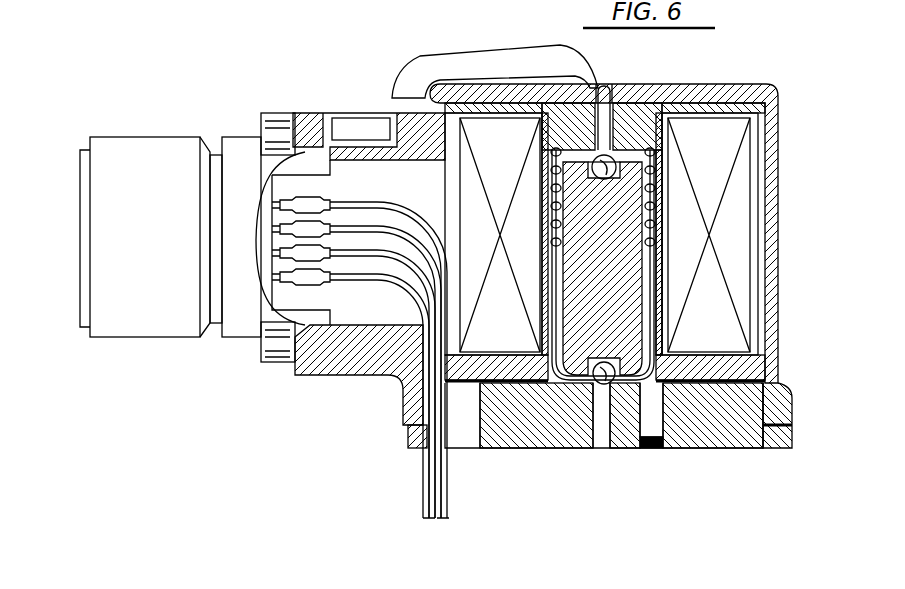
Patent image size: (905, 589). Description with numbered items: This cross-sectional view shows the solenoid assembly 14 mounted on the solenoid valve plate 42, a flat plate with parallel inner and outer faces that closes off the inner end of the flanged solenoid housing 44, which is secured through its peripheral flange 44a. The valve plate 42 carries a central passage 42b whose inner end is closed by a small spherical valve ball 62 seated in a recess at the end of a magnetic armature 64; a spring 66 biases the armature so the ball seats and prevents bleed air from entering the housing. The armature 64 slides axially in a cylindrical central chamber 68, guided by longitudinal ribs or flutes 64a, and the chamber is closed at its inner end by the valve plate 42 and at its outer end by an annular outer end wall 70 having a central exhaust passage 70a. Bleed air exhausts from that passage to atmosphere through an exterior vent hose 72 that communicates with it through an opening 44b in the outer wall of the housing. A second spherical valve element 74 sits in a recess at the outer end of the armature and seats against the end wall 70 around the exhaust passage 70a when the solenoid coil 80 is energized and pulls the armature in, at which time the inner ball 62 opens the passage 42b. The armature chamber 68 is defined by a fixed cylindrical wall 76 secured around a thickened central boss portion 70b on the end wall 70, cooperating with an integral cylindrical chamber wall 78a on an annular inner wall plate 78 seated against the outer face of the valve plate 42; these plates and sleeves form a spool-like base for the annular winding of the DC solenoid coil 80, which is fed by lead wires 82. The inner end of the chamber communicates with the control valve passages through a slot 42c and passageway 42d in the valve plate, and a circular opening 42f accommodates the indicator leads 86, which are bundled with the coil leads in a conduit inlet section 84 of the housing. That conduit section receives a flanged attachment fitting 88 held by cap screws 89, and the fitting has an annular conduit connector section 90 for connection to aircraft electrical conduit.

The solenoid assembly 14 is at (640, 494).
The solenoid valve plate 42 is at (737, 441).
The central passage 42b is at (598, 442).
The slot 42c is at (645, 441).
The passageway 42d is at (658, 403).
The circular opening 42f is at (475, 430).
The solenoid housing 44 is at (772, 84).
The peripheral flange 44a is at (793, 405).
The opening 44b is at (592, 85).
The valve ball 62 is at (608, 358).
The magnetic armature 64 is at (613, 258).
The ribs or flutes 64a is at (650, 287).
The spring 66 is at (660, 185).
The central chamber 68 is at (612, 122).
The annular outer end wall 70 is at (665, 125).
The exhaust passage 70a is at (593, 95).
The central boss portion 70b is at (575, 125).
The exterior vent hose 72 is at (438, 54).
The second spherical valve element 74 is at (600, 178).
The cylindrical wall 76 is at (666, 165).
The inner wall plate 78 is at (735, 366).
The cylindrical chamber wall 78a is at (662, 316).
The solenoid coil 80 is at (716, 238).
The lead wires 82 is at (350, 229).
The conduit inlet section 84 is at (360, 322).
The indicator leads 86 is at (374, 255).
The attachment fitting 88 is at (242, 137).
The cap screws 89 is at (278, 113).
The conduit connector section 90 is at (78, 240).